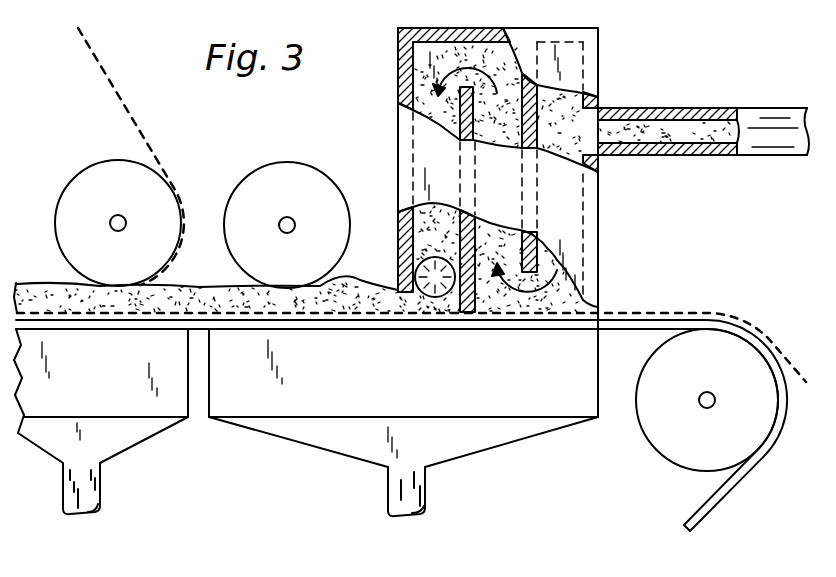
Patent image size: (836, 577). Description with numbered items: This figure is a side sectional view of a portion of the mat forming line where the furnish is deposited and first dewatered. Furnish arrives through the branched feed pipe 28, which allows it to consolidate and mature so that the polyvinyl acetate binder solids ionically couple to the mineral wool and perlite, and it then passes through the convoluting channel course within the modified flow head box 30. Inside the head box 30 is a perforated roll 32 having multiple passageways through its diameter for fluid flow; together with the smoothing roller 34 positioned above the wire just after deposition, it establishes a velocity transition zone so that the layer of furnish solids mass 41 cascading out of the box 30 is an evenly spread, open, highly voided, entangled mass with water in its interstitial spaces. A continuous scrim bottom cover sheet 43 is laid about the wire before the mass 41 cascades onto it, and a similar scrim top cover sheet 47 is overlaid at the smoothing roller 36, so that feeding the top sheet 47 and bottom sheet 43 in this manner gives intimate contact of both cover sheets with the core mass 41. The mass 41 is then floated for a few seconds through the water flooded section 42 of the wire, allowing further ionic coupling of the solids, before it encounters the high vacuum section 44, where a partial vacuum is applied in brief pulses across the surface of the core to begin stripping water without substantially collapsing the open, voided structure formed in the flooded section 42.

The branched feed pipe 28 is at (700, 108).
The modified flow head box 30 is at (598, 83).
The perforated roll 32 is at (413, 250).
The smoothing roller 34 is at (318, 163).
The smoothing roller 36 is at (78, 172).
The layer of furnish solids mass 41 is at (196, 298).
The first flooded section 42 is at (426, 386).
The scrim bottom cover sheet 43 is at (781, 360).
The high vacuum section 44 is at (100, 384).
The scrim top cover sheet 47 is at (143, 138).